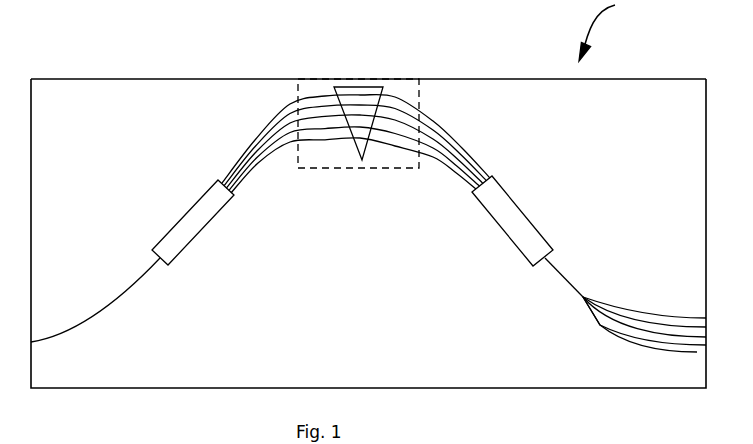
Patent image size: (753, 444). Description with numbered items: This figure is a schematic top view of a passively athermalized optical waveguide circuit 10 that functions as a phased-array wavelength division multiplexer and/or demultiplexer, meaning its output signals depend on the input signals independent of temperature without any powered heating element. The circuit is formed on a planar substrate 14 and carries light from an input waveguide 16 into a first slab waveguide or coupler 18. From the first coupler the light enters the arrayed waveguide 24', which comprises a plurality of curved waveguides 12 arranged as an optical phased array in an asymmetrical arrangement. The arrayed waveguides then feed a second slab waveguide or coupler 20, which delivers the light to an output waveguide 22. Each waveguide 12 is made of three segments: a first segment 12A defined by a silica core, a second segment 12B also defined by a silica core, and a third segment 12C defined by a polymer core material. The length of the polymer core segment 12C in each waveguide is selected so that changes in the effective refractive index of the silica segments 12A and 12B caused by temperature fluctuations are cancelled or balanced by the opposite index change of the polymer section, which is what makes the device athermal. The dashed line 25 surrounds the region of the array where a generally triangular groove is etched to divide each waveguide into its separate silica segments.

The passively athermalized optical waveguide circuit 10 is at (613, 30).
The waveguides 12 is at (345, 131).
The first segment 12A is at (255, 140).
The second segment 12B is at (428, 112).
The third segment 12C is at (359, 96).
The planar substrate 14 is at (640, 150).
The input waveguide 16 is at (92, 320).
The first slab waveguide 18 is at (190, 228).
The second slab waveguide 20 is at (513, 224).
The output waveguide 22 is at (605, 328).
The arrayed waveguide 24' is at (368, 53).
The dashed line 25 is at (362, 170).